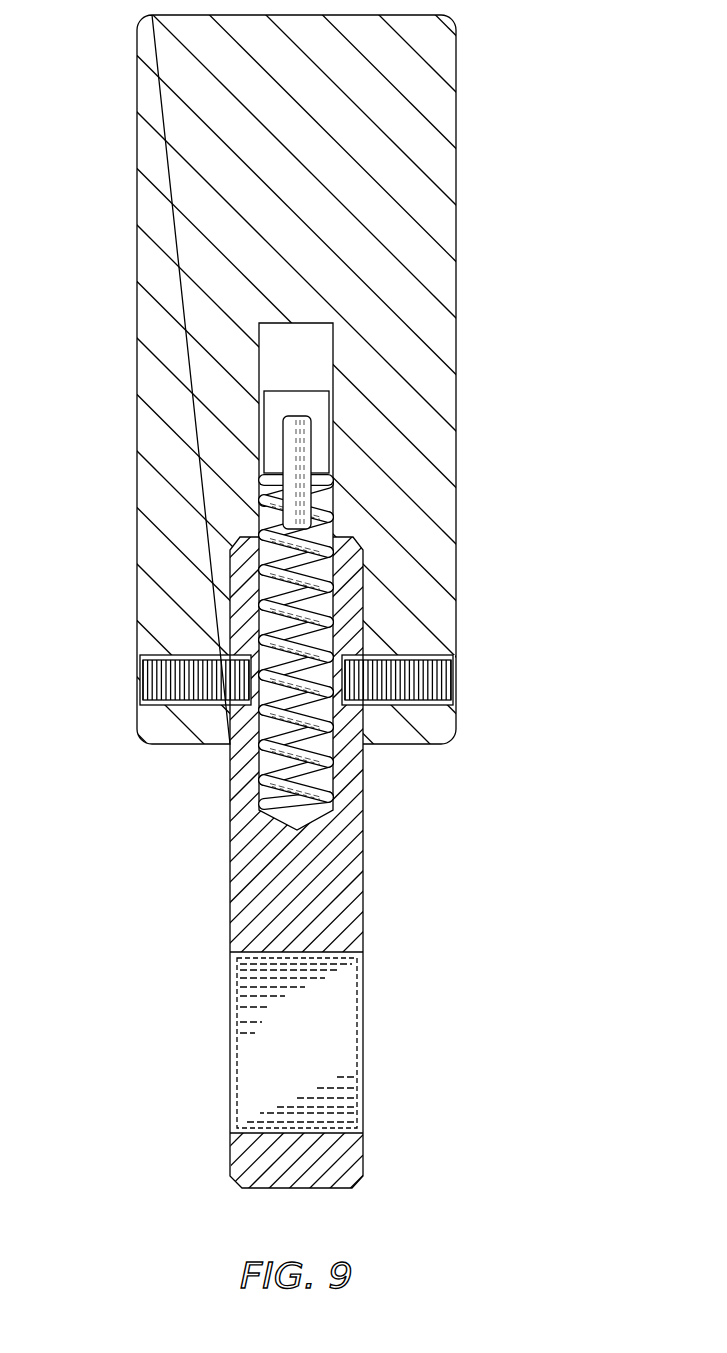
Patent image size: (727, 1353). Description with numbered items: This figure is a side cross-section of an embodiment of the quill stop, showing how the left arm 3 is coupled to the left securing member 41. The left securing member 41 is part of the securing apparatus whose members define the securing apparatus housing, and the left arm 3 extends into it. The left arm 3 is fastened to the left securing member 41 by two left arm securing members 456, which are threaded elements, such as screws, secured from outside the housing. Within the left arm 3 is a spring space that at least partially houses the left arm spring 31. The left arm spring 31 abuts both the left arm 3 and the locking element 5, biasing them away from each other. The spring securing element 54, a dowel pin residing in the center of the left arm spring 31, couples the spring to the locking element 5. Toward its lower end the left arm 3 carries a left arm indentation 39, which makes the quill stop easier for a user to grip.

The left securing member 41 is at (410, 143).
The left arm 3 is at (332, 900).
The locking element 5 is at (313, 407).
The spring securing element 54 is at (293, 442).
The left arm spring 31 is at (310, 732).
The left arm securing member 456 is at (137, 678).
The left arm indentation 39 is at (257, 1033).